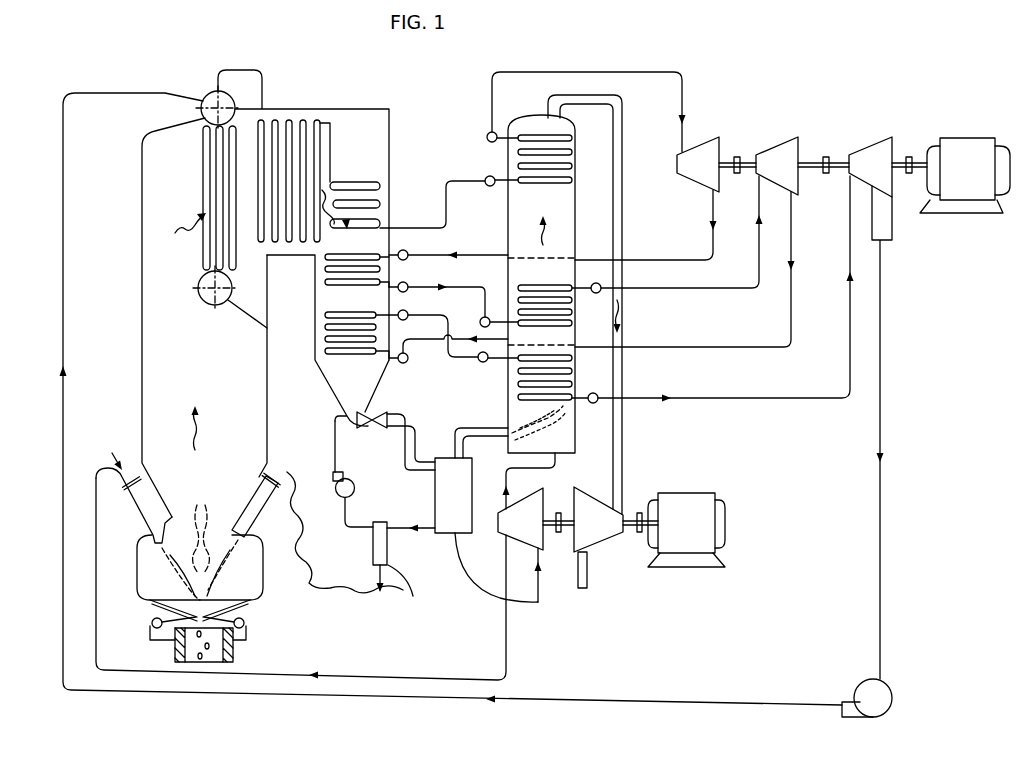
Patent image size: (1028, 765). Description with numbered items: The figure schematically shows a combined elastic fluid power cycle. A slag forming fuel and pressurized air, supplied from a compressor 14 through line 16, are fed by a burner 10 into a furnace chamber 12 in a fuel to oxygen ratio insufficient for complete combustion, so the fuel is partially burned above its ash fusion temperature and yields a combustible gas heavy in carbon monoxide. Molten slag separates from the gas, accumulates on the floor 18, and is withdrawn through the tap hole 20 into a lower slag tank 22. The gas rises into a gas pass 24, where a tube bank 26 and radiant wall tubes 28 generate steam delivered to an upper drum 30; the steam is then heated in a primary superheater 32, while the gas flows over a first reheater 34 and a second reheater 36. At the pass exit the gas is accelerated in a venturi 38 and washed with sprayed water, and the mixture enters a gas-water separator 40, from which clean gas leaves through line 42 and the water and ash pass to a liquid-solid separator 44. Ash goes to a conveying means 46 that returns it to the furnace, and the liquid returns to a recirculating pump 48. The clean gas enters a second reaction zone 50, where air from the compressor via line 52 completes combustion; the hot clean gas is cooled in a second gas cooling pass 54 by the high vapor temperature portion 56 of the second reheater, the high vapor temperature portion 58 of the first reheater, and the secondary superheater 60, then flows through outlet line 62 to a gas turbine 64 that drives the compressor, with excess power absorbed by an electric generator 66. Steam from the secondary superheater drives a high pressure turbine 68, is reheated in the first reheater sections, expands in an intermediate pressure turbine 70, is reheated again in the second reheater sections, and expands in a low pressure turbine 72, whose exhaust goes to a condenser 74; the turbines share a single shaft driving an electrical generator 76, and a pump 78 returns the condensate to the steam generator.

The burner 10 is at (140, 505).
The furnace chamber 12 is at (210, 511).
The compressor 14 is at (525, 511).
The line 16 is at (412, 677).
The floor 18 is at (163, 602).
The tap hole 20 is at (233, 602).
The lower slag tank 22 is at (236, 659).
The gas pass 24 is at (259, 175).
The tube bank 26 is at (216, 146).
The radiant wall tubes 28 is at (141, 293).
The upper drum 30 is at (207, 93).
The primary superheater 32 is at (355, 197).
The first reheater 34 is at (325, 263).
The second reheater 36 is at (325, 333).
The venturi 38 is at (372, 429).
The gas-water separator 40 is at (452, 503).
The line 42 is at (480, 432).
The liquid-solid separator 44 is at (388, 545).
The conveying means 46 is at (358, 600).
The recirculating pump 48 is at (354, 486).
The second reaction zone 50 is at (562, 405).
The line 52 is at (547, 472).
The second gas cooling pass 54 is at (556, 229).
The high vapor temperature portion of second reheater 56 is at (565, 372).
The high vapor temperature portion of first reheater 58 is at (535, 298).
The secondary superheater 60 is at (558, 168).
The outlet line 62 is at (625, 148).
The gas turbine 64 is at (601, 534).
The electric generator 66 is at (704, 531).
The high pressure turbine 68 is at (704, 148).
The intermediate pressure turbine 70 is at (775, 148).
The low pressure turbine 72 is at (868, 158).
The condenser 74 is at (883, 214).
The electrical generator 76 is at (982, 148).
The pump 78 is at (880, 693).